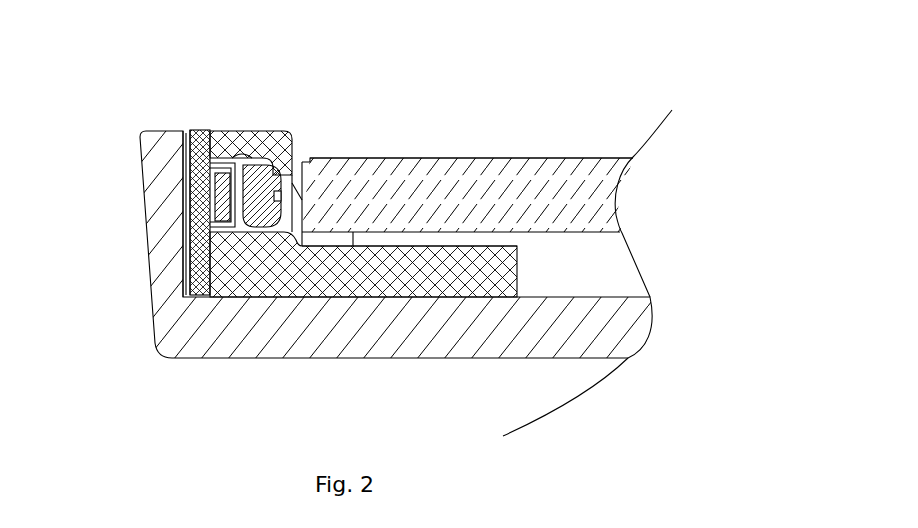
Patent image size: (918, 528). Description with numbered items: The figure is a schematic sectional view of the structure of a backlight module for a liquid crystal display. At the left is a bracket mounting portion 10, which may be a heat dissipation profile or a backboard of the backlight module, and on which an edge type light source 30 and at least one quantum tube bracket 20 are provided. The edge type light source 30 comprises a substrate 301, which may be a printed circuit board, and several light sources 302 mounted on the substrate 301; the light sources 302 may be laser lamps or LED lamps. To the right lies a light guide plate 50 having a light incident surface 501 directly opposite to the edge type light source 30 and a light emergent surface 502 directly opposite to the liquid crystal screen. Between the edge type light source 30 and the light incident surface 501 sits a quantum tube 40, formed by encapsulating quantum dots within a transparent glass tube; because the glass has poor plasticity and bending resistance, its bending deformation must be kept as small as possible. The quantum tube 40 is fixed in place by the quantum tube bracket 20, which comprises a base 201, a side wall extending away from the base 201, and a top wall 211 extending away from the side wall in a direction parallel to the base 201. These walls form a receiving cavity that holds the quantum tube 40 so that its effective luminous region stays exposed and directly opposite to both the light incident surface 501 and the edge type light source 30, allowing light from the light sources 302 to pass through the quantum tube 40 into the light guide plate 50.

The bracket mounting portion 10 is at (165, 250).
The substrate 301 is at (186, 292).
The light source 302 is at (197, 183).
The quantum tube bracket 20 is at (234, 146).
The top wall 211 is at (228, 156).
The edge type light source 30 is at (222, 172).
The quantum tube 40 is at (292, 182).
The base 201 is at (274, 227).
The light guide plate 50 is at (377, 192).
The light incident surface 501 is at (300, 245).
The light emergent surface 502 is at (465, 157).